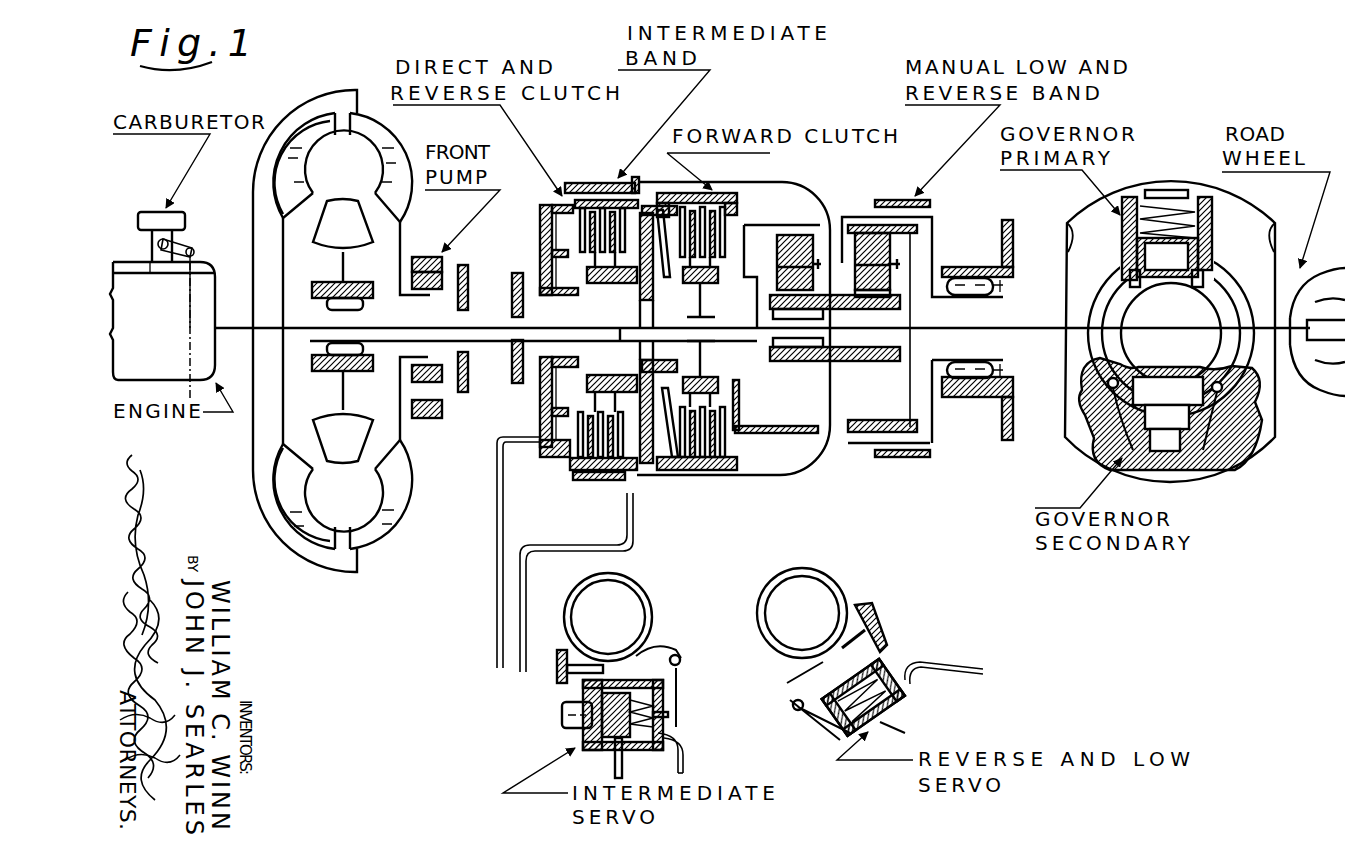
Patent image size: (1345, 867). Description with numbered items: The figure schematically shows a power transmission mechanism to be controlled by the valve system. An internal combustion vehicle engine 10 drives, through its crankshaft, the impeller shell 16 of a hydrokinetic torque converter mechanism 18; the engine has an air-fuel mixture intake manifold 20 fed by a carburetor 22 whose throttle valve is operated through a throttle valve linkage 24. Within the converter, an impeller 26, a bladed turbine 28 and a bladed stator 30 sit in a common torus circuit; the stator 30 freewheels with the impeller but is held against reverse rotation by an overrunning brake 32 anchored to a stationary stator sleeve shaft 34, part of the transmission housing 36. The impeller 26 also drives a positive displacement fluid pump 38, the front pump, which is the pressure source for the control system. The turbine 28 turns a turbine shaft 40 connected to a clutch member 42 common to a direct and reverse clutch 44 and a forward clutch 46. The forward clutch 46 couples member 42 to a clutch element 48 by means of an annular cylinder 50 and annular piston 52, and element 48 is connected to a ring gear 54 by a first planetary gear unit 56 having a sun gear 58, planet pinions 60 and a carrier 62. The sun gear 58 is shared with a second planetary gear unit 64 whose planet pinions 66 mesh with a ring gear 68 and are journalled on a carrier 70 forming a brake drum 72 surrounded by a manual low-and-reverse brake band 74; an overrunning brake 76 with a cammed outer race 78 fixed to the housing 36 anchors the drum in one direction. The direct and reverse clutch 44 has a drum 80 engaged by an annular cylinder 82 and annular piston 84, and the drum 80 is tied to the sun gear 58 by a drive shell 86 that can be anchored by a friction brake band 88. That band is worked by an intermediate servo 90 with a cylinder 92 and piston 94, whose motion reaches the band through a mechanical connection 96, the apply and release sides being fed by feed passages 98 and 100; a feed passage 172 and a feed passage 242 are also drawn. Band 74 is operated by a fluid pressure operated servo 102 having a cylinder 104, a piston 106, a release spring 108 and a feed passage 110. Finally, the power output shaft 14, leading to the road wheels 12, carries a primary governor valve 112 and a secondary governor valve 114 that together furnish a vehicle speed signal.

The internal combustion vehicle engine 10 is at (203, 360).
The road wheels 12 is at (1312, 375).
The power output shaft 14 is at (1013, 340).
The impeller shell 16 is at (308, 95).
The hydrokinetic torque converter mechanism 18 is at (370, 103).
The air-fuel mixture intake manifold 20 is at (136, 282).
The carburetor 22 is at (150, 212).
The throttle valve linkage 24 is at (193, 245).
The impeller 26 is at (402, 138).
The bladed turbine 28 is at (320, 162).
The bladed stator 30 is at (326, 236).
The overrunning brake 32 is at (336, 372).
The stator sleeve shaft 34 is at (348, 417).
The transmission housing 36 is at (510, 282).
The positive displacement fluid pump 38 is at (432, 420).
The turbine shaft 40 is at (608, 330).
The clutch member 42 is at (660, 192).
The direct and reverse clutch 44 is at (562, 196).
The forward clutch 46 is at (728, 192).
The clutch element 48 is at (712, 284).
The annular cylinder 50 is at (658, 268).
The annular piston 52 is at (660, 399).
The ring gear 54 is at (805, 195).
The first planetary gear unit 56 is at (828, 236).
The sun gear 58 is at (848, 362).
The planet pinions 60 is at (790, 225).
The carrier 62 is at (782, 262).
The second planetary gear unit 64 is at (900, 250).
The planet pinions 66 is at (868, 218).
The ring gear 68 is at (898, 198).
The carrier 70 is at (885, 283).
The brake drum 72 is at (862, 452).
The manual low-and-reverse brake band 74 is at (910, 460).
The overrunning brake 76 is at (985, 362).
The outer race 78 is at (975, 398).
The drum 80 is at (552, 458).
The annular cylinder 82 is at (540, 225).
The annular piston 84 is at (525, 410).
The drive shell 86 is at (808, 472).
The friction brake band 88 is at (595, 482).
The intermediate servo 90 is at (578, 694).
The cylinder 92 is at (683, 748).
The piston 94 is at (608, 683).
The mechanical connection 96 is at (682, 673).
The feed passage 98 is at (592, 745).
The feed passage 100 is at (684, 767).
The fluid pressure operated servo 102 is at (912, 697).
The cylinder 104 is at (830, 687).
The piston 106 is at (890, 665).
The spring 108 is at (887, 717).
The feed passage 110 is at (975, 660).
The primary governor valve 112 is at (1195, 187).
The secondary governor valve 114 is at (1205, 445).
The pressure line 172 is at (520, 597).
The pressure line 242 is at (480, 512).